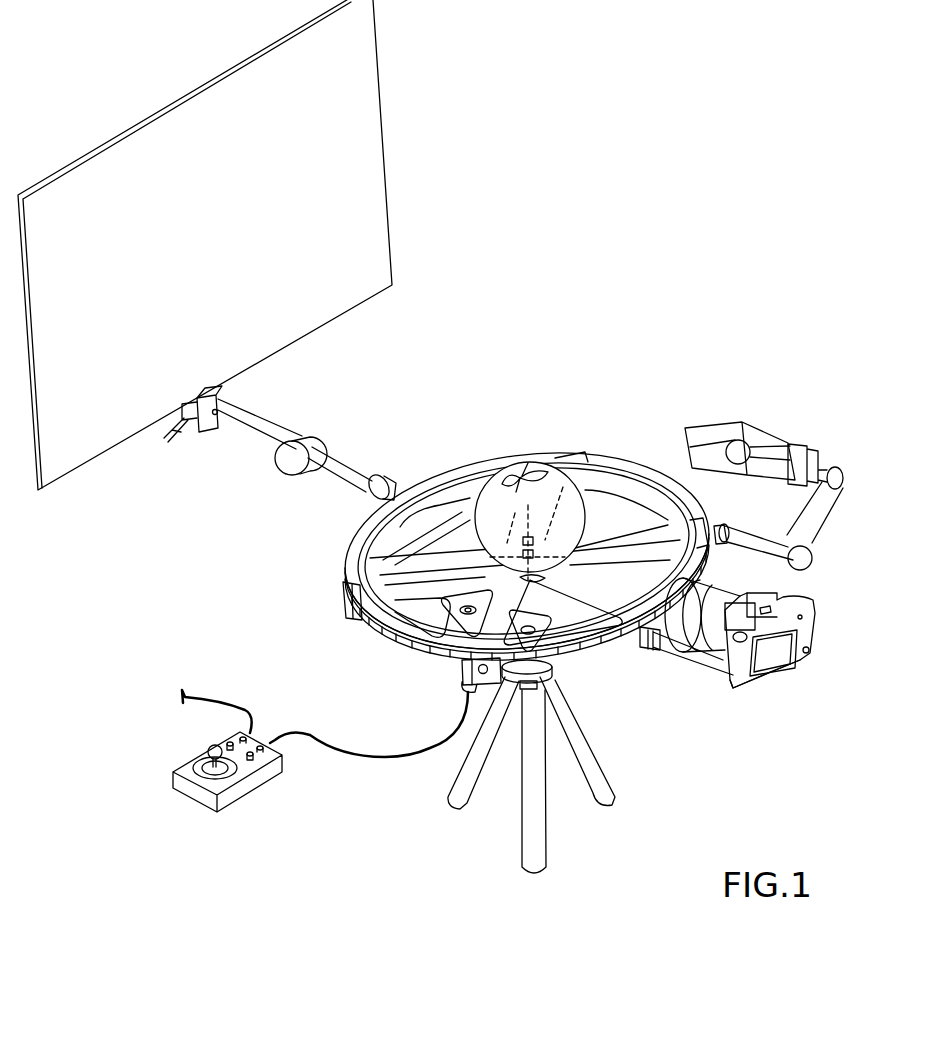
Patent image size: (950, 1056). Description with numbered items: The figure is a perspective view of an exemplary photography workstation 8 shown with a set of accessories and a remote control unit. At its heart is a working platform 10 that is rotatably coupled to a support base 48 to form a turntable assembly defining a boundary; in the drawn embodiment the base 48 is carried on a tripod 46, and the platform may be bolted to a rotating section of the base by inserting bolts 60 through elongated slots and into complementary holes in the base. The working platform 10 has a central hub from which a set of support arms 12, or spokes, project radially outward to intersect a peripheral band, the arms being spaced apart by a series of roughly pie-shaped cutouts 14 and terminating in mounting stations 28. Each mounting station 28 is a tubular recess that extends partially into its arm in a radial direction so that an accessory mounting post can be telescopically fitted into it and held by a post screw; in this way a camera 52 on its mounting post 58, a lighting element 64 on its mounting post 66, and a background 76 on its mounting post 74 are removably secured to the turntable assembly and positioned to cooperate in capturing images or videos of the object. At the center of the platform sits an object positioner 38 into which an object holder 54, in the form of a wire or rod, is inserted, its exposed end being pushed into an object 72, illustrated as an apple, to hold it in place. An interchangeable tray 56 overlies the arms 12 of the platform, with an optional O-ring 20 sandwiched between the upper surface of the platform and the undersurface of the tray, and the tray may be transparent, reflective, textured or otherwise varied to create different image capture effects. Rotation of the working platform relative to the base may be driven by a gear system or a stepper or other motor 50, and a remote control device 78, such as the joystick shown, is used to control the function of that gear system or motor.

The photography workstation 8 is at (593, 362).
The working platform 10 is at (377, 523).
The support arms 12 is at (620, 603).
The pie-shaped cutouts 14 is at (393, 627).
The O-ring 20 is at (353, 567).
The mounting station 28 is at (345, 600).
The object positioner 38 is at (552, 532).
The tripod 46 is at (570, 720).
The support base 48 is at (546, 616).
The motor 50 is at (467, 697).
The camera 52 is at (812, 452).
The object holder 54 is at (580, 450).
The interchangeable tray 56 is at (625, 468).
The accessory mounting post 58 is at (732, 528).
The bolts 60 is at (512, 512).
The lighting element 64 is at (775, 677).
The mounting post 66 is at (698, 657).
The object 72 is at (512, 475).
The mounting post 74 is at (250, 422).
The background 76 is at (325, 318).
The remote control device 78 is at (208, 802).